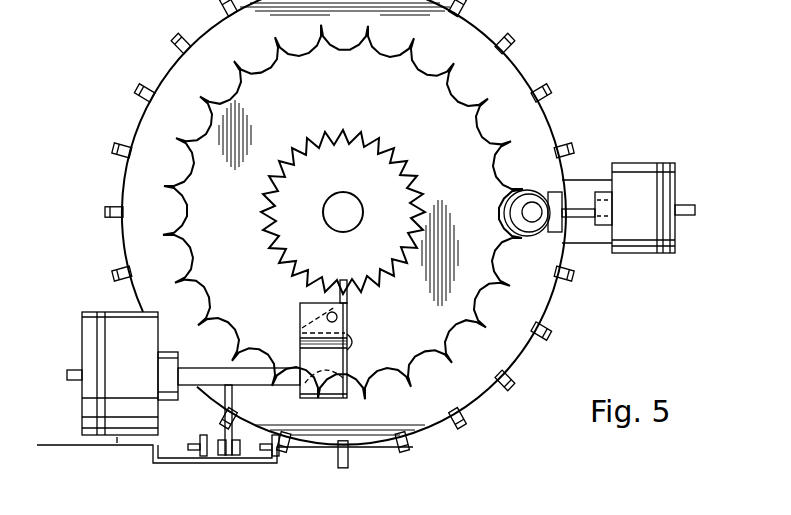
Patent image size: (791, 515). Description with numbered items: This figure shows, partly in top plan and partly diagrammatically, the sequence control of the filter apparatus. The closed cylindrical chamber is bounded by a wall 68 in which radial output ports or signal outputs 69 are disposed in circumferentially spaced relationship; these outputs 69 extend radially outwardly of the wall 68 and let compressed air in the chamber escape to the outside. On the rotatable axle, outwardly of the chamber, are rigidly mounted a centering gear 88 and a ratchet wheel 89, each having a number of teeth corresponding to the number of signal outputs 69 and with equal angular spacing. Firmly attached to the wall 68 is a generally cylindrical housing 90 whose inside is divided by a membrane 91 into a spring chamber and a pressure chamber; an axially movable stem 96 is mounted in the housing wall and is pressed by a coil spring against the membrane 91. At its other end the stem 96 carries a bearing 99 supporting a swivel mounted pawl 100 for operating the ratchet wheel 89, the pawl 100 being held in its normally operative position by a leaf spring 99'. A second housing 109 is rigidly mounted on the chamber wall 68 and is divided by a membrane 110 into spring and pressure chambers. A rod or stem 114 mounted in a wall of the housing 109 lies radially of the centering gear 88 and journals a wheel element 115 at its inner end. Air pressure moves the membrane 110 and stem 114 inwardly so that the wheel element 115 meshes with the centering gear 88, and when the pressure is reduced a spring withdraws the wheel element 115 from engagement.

The chamber wall 68 is at (460, 383).
The signal outputs 69 is at (518, 389).
The centering gear 88 is at (500, 292).
The ratchet wheel 89 is at (384, 210).
The cylindrical housing 90 is at (74, 337).
The membrane 91 is at (100, 395).
The stem 96 is at (249, 378).
The bearing 99 is at (343, 364).
The leaf spring 99' is at (385, 338).
The pawl 100 is at (348, 292).
The housing 109 is at (634, 264).
The membrane 110 is at (654, 224).
The stem 114 is at (573, 212).
The wheel element 115 is at (553, 186).